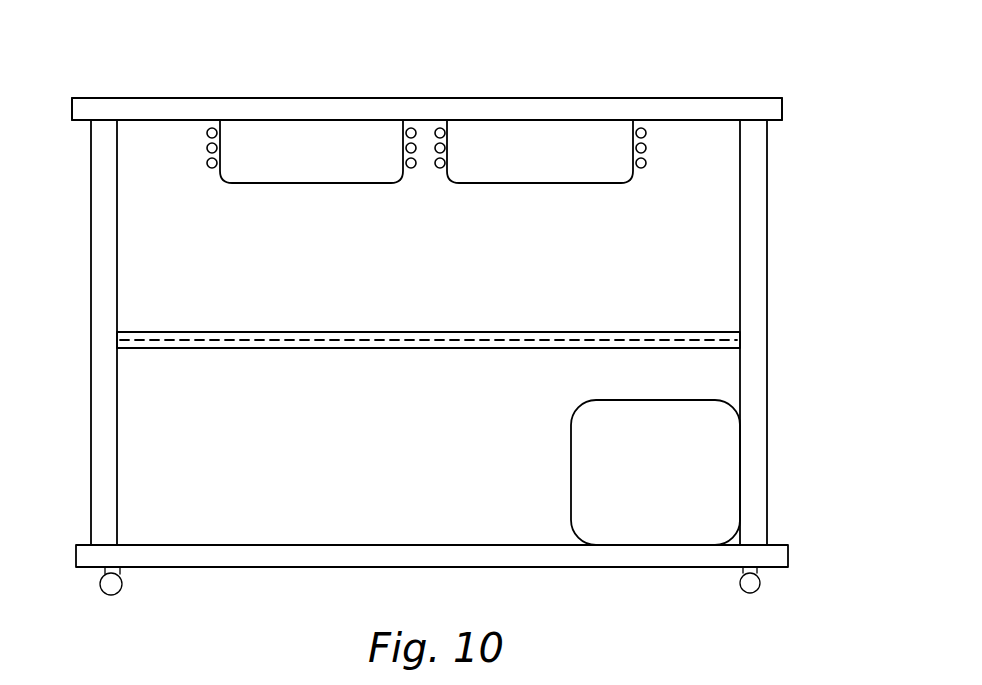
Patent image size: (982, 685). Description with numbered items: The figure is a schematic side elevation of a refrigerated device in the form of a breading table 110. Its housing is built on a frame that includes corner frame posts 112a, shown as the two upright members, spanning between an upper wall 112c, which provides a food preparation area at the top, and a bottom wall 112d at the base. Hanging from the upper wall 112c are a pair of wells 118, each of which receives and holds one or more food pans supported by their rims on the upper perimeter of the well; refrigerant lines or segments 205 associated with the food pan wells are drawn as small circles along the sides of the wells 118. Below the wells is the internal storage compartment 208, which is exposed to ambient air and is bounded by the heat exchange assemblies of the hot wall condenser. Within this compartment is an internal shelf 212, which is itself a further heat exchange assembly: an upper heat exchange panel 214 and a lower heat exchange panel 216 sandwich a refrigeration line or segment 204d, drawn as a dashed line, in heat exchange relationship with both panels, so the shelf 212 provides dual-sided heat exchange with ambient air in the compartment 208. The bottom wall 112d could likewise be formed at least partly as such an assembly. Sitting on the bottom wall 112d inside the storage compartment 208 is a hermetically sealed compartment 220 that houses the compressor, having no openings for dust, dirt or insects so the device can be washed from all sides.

The breading table 110 is at (727, 39).
The corner frame posts 112a is at (98, 372).
The upper wall 112c is at (133, 104).
The bottom wall 112d is at (725, 563).
The wells 118 is at (322, 181).
The refrigerant lines or segments 205 is at (208, 134).
The internal storage compartment 208 is at (447, 279).
The internal shelf 212 is at (204, 366).
The upper heat exchange panel 214 is at (292, 332).
The lower heat exchange panel 216 is at (263, 350).
The refrigeration line or segment 204d is at (158, 362).
The hermetically sealed compartment 220 is at (677, 484).